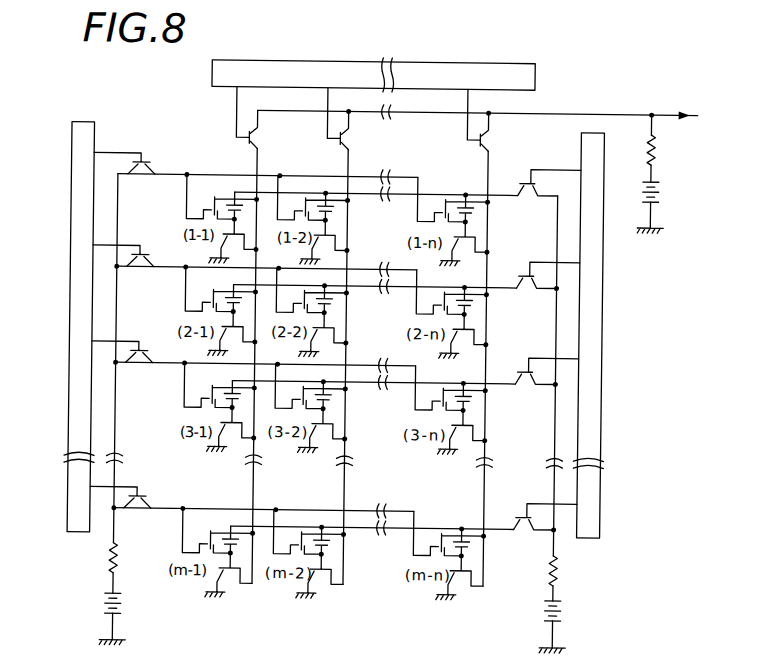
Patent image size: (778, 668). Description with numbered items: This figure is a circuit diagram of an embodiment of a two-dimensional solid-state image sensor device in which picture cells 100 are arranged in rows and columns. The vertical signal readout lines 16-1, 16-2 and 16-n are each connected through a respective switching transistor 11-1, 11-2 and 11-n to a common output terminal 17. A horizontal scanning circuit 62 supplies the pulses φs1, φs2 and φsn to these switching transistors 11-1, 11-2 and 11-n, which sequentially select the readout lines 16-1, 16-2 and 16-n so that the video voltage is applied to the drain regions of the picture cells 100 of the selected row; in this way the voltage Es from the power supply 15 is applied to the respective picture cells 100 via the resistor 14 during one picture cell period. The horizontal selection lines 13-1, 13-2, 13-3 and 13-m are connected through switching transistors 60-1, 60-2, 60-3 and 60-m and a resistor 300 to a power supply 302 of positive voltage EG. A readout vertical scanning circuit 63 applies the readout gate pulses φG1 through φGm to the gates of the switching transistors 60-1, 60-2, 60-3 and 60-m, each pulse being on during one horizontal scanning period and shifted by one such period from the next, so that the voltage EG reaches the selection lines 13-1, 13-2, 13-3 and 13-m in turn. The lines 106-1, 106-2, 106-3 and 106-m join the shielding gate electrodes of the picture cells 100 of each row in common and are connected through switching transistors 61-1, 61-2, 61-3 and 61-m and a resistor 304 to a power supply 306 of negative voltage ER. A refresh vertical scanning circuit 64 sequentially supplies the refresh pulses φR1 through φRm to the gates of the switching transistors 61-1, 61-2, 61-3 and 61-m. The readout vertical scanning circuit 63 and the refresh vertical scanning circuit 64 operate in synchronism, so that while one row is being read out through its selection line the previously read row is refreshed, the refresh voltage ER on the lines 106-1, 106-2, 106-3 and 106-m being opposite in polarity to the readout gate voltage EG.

The horizontal scanning circuit 62 is at (356, 62).
The output terminal 17 is at (489, 117).
The resistor 14 is at (659, 152).
The power supply 15 is at (661, 204).
The refresh vertical scanning circuit 64 is at (62, 368).
The readout vertical scanning circuit 63 is at (603, 388).
The switching transistor 11-1 is at (247, 117).
The switching transistor 11-2 is at (347, 119).
The switching transistor 11-n is at (483, 120).
The signal readout line 16-1 is at (259, 158).
The signal readout line 16-2 is at (349, 161).
The signal readout line 16-n is at (486, 169).
The picture cell 100 is at (215, 196).
The switching transistor 61-1 is at (169, 179).
The switching transistor 61-2 is at (172, 272).
The switching transistor 61-3 is at (172, 368).
The switching transistor 61-m is at (251, 499).
The line of shielding gate electrodes 106-1 is at (172, 201).
The line of shielding gate electrodes 106-2 is at (171, 293).
The line of shielding gate electrodes 106-3 is at (166, 394).
The line of shielding gate electrodes 106-m is at (167, 511).
The selection line 13-1 is at (362, 196).
The selection line 13-2 is at (362, 288).
The selection line 13-3 is at (362, 384).
The selection line 13-m is at (365, 530).
The switching transistor 60-1 is at (544, 187).
The switching transistor 60-2 is at (541, 280).
The switching transistor 60-3 is at (542, 374).
The switching transistor 60-m is at (536, 521).
The resistor 300 is at (573, 577).
The power supply 302 is at (540, 608).
The resistor 304 is at (106, 571).
The power supply 306 is at (106, 611).